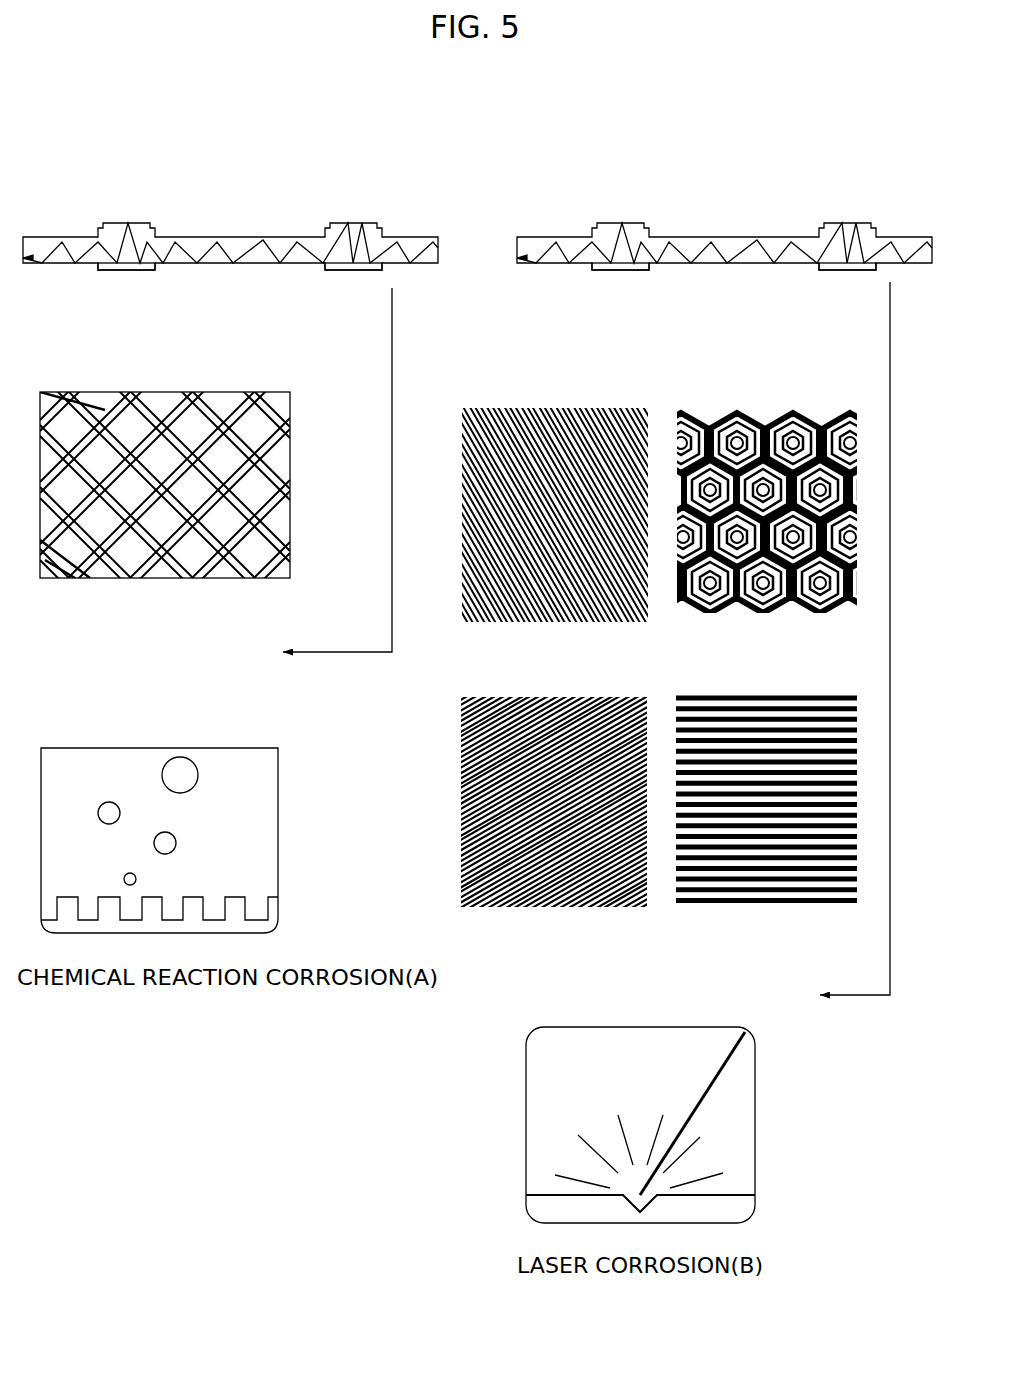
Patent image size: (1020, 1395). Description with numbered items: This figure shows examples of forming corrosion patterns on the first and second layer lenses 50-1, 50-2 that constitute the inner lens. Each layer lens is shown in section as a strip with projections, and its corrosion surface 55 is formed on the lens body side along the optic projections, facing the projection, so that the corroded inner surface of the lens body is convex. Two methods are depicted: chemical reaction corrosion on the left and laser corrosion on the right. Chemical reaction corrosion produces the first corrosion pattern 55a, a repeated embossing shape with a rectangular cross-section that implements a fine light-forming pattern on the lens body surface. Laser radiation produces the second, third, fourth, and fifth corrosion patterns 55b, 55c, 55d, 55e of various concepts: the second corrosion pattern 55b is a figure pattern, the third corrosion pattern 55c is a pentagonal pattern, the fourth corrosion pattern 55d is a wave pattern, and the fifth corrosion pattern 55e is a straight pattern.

The first layer lens 50-1 is at (412, 205).
The second layer lens 50-2 is at (527, 205).
The corrosion surface 55 is at (131, 272).
The first corrosion pattern 55a is at (152, 578).
The second corrosion pattern 55b is at (592, 622).
The third corrosion pattern 55c is at (773, 615).
The fourth corrosion pattern 55d is at (552, 908).
The fifth corrosion pattern 55e is at (762, 905).